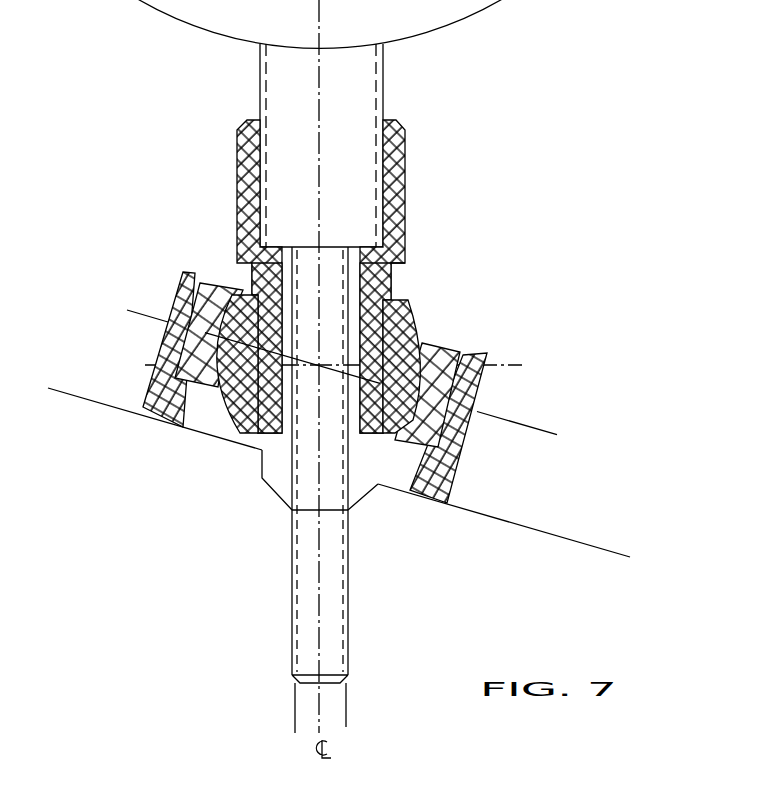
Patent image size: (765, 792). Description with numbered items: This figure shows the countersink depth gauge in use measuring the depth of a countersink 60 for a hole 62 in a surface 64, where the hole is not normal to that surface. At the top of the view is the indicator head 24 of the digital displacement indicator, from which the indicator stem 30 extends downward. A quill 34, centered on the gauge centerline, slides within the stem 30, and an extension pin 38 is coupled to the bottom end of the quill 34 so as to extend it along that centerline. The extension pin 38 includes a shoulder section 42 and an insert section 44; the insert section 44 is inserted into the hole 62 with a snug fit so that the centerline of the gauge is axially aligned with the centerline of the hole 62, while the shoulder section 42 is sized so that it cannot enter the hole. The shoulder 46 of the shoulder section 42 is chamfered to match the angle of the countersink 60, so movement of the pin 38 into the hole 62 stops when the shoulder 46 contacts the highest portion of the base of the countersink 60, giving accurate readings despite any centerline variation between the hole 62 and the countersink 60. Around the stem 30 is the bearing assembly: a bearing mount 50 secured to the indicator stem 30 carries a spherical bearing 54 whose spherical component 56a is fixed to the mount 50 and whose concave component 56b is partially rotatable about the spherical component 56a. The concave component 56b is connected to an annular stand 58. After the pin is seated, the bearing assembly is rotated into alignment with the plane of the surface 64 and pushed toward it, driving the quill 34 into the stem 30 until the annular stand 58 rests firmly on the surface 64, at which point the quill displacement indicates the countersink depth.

The indicator head 24 is at (527, 0).
The indicator stem 30 is at (388, 68).
The quill 34 is at (285, 261).
The extension pin 38 is at (364, 577).
The shoulder section 42 is at (290, 480).
The insert section 44 is at (354, 652).
The shoulder 46 is at (288, 515).
The bearing mount 50 is at (410, 226).
The spherical bearing 54 is at (222, 262).
The spherical component 56a is at (424, 306).
The concave component 56b is at (455, 339).
The annular stand 58 is at (485, 392).
The countersink 60 is at (379, 491).
The hole 62 is at (334, 716).
The surface 64 is at (87, 384).